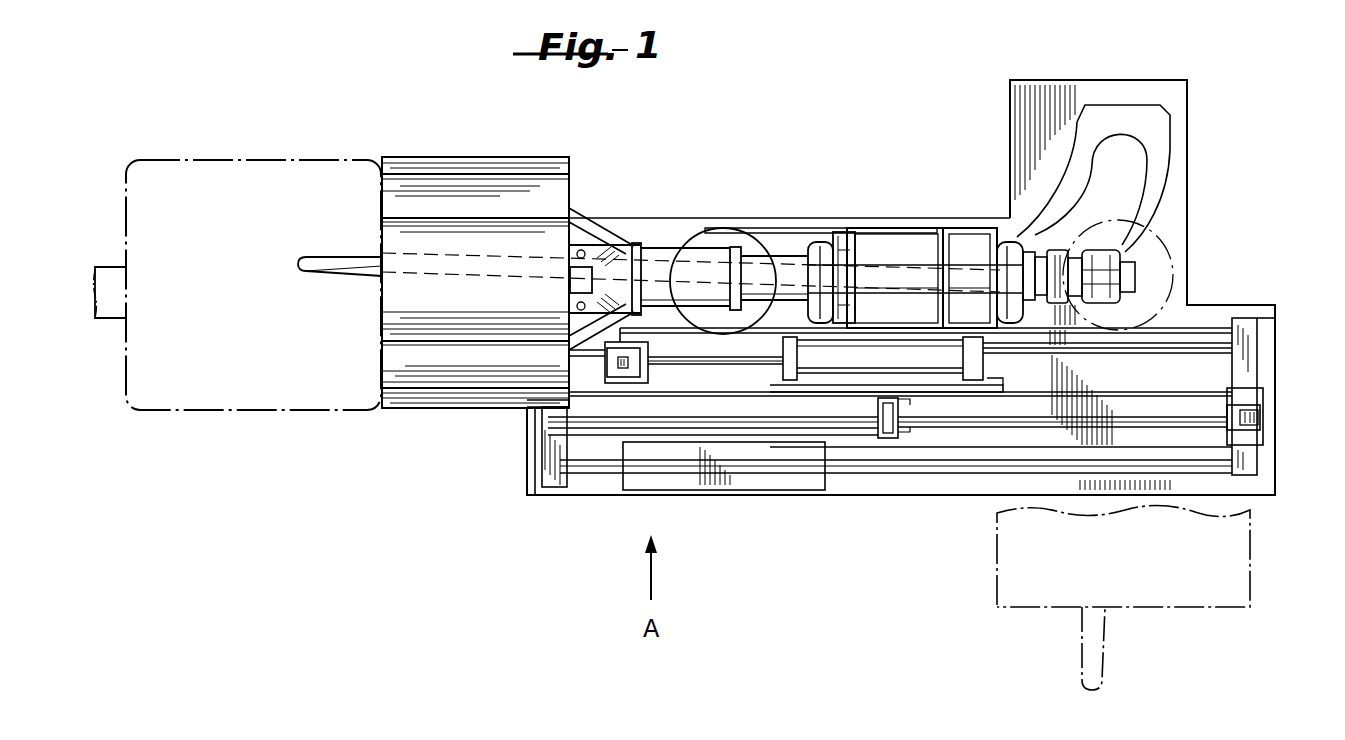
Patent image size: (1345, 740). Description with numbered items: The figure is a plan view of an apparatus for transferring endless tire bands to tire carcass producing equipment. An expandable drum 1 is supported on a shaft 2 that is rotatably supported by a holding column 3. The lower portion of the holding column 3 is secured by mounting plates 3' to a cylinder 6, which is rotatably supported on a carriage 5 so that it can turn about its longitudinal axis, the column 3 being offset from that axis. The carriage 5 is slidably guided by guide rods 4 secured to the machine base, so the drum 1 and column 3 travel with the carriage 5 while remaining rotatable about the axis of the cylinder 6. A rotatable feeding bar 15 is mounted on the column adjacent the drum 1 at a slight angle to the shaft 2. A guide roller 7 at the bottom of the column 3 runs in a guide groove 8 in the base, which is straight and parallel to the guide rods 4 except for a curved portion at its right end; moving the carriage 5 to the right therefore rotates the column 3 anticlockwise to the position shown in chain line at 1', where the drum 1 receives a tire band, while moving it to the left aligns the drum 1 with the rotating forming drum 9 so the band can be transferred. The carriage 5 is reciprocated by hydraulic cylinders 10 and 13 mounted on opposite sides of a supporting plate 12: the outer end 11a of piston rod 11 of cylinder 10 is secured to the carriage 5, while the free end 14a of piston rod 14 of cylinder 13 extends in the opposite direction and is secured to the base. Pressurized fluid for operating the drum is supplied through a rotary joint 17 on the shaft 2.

The expandable drum 1 is at (475, 262).
The rotated position of expandable drum 1' is at (1123, 597).
The shaft 2 is at (752, 272).
The holding column 3 is at (915, 253).
The mounting plates 3' is at (797, 250).
The guide rods 4 is at (1206, 333).
The carriage 5 is at (668, 470).
The cylinder 6 is at (702, 246).
The guide roller 7 is at (830, 228).
The guide groove 8 is at (1020, 228).
The forming drum 9 is at (272, 398).
The hydraulic cylinder 10 is at (857, 362).
The piston rod 11 is at (695, 366).
The outer end of piston rod 11a is at (615, 383).
The supporting plate 12 is at (797, 393).
The hydraulic cylinder 13 is at (740, 436).
The piston rod 14 is at (930, 428).
The free end of piston rod 14a is at (1250, 428).
The feeding bar 15 is at (326, 258).
The rotary joint 17 is at (1140, 272).